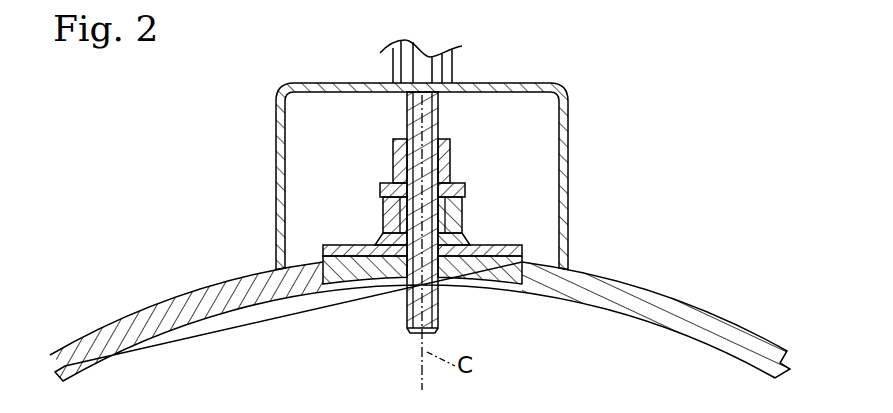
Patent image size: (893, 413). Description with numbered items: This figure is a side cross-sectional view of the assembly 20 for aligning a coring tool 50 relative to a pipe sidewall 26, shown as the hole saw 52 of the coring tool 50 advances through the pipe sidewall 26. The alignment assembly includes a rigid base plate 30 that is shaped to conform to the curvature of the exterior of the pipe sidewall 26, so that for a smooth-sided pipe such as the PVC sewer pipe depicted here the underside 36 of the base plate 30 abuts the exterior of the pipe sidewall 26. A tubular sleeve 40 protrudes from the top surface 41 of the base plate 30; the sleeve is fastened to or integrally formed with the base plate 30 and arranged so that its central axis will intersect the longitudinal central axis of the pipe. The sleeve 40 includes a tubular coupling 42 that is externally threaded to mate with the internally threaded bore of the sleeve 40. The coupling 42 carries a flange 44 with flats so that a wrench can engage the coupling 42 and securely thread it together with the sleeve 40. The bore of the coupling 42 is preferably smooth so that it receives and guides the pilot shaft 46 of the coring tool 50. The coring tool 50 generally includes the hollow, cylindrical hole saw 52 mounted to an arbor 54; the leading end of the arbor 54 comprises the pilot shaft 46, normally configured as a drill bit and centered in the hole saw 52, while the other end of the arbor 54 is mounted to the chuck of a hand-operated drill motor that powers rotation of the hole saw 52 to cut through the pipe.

The assembly 20 is at (354, 166).
The pipe sidewall 26 is at (670, 293).
The base plate 30 is at (500, 244).
The underside 36 is at (335, 260).
The tubular sleeve 40 is at (464, 216).
The top surface 41 is at (338, 250).
The tubular coupling 42 is at (393, 158).
The flange 44 is at (452, 185).
The pilot shaft 46 is at (440, 296).
The coring tool 50 is at (381, 72).
The hole saw 52 is at (568, 186).
The arbor 54 is at (452, 69).